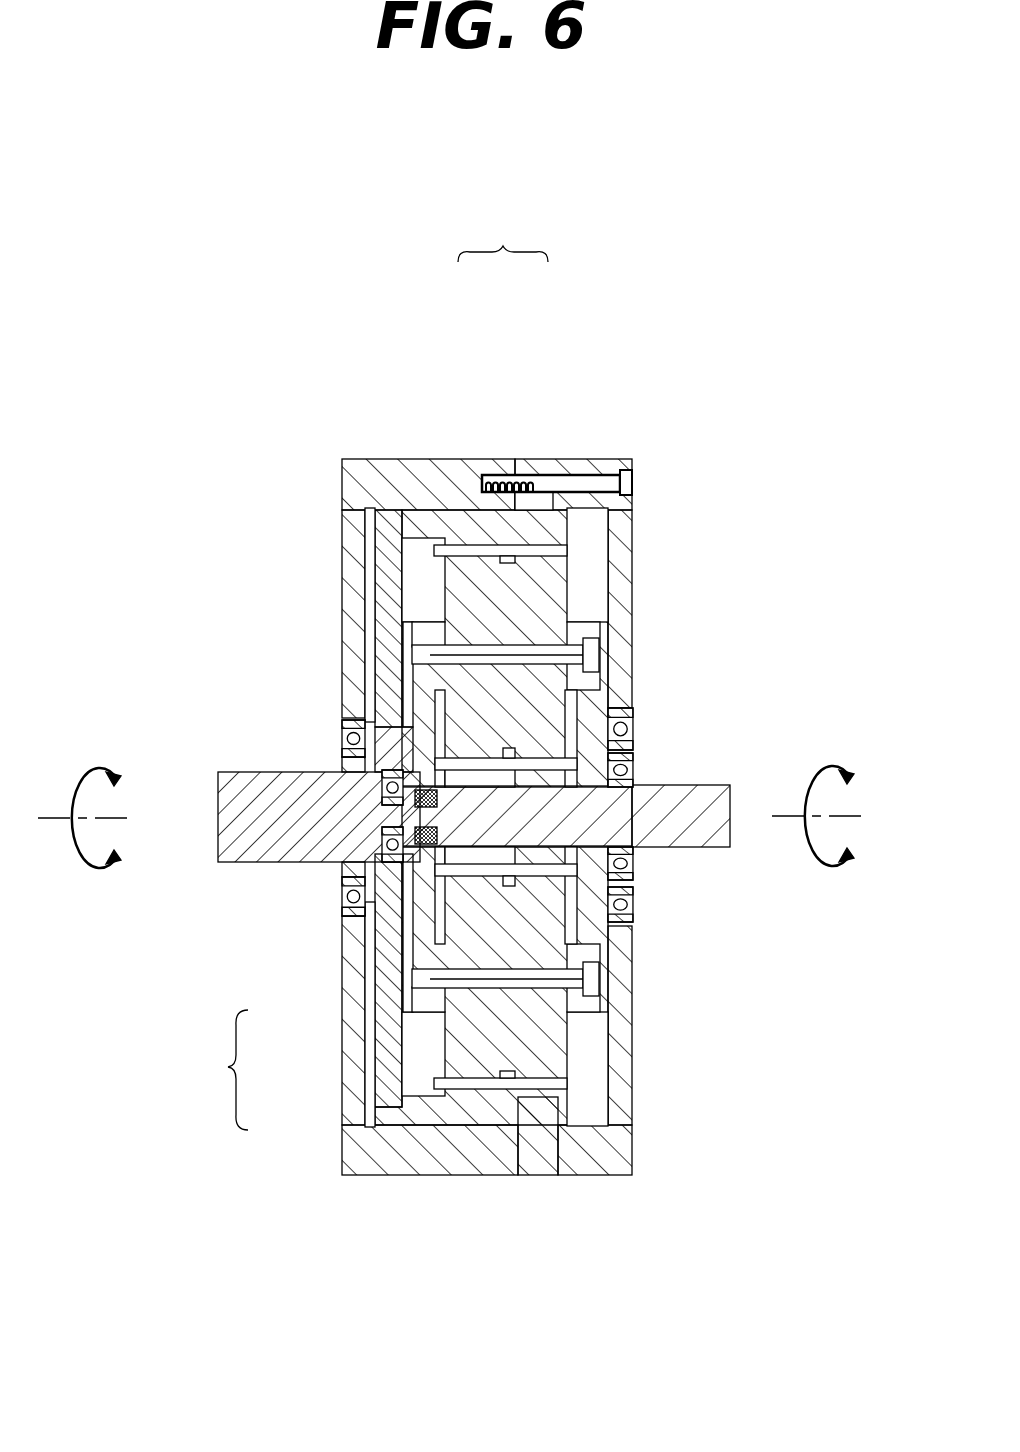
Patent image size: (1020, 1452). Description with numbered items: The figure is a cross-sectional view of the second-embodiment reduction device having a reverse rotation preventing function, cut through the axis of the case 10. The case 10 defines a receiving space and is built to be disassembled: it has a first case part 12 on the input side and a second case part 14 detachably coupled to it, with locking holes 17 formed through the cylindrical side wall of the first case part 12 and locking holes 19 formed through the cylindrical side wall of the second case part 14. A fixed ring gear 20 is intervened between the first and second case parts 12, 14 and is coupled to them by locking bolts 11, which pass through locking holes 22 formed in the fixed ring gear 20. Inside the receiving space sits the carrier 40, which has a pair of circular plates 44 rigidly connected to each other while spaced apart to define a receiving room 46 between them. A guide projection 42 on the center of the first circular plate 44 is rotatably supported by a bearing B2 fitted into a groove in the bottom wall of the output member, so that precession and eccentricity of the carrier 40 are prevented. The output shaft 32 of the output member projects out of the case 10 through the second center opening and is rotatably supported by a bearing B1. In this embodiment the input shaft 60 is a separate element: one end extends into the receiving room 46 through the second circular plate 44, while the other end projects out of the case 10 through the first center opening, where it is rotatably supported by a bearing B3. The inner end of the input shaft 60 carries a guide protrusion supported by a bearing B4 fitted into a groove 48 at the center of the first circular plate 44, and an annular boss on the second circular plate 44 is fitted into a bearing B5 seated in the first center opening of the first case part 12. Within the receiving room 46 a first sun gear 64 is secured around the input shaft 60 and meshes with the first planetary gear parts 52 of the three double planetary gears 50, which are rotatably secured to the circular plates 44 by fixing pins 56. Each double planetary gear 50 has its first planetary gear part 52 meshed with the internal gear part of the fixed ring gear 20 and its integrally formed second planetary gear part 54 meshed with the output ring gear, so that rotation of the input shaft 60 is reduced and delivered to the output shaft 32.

The case 10 is at (503, 240).
The locking bolts 11 is at (633, 470).
The first case part 12 is at (589, 459).
The second case part 14 is at (427, 459).
The locking holes 17 is at (620, 459).
The locking holes 19 is at (490, 459).
The fixed ring gear 20 is at (536, 1165).
The locking holes 22 is at (567, 512).
The output shaft 32 is at (282, 770).
The carrier 40 is at (215, 1070).
The guide projection 42 is at (372, 933).
The circular plates 44 is at (420, 1040).
The receiving room 46 is at (410, 1000).
The groove 48 is at (395, 952).
The double planetary gears 50 is at (440, 575).
The first planetary gear part 52 is at (540, 1075).
The second planetary gear part 54 is at (440, 1090).
The fixing pins 56 is at (585, 653).
The input shaft 60 is at (690, 812).
The first sun gear 64 is at (632, 708).
The bearing B1 is at (342, 725).
The bearing B2 is at (382, 798).
The bearing B3 is at (633, 870).
The bearing B4 is at (428, 778).
The bearing B5 is at (633, 935).